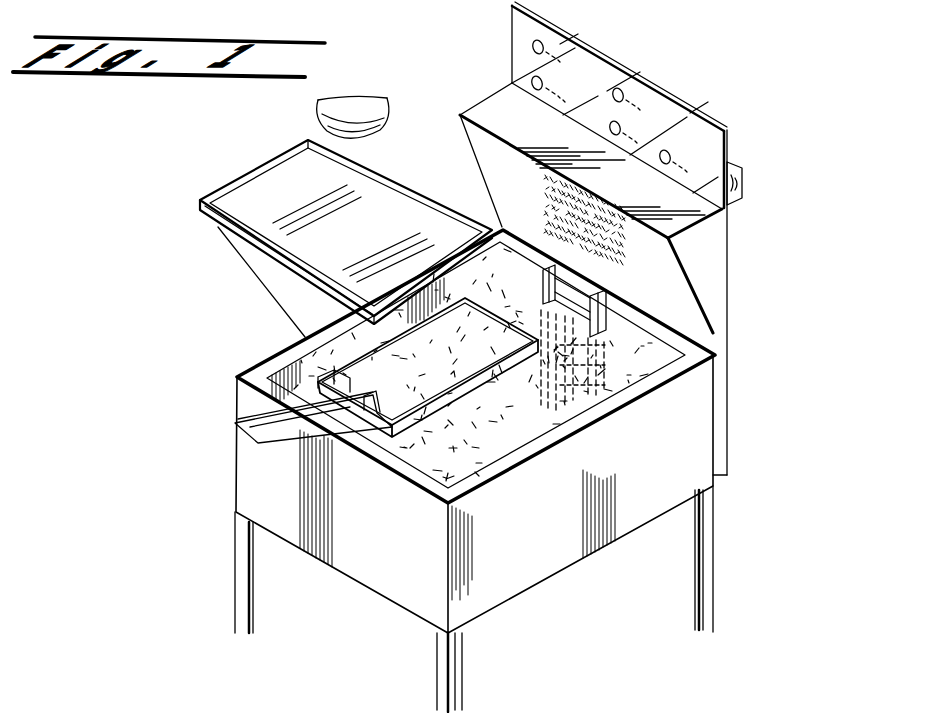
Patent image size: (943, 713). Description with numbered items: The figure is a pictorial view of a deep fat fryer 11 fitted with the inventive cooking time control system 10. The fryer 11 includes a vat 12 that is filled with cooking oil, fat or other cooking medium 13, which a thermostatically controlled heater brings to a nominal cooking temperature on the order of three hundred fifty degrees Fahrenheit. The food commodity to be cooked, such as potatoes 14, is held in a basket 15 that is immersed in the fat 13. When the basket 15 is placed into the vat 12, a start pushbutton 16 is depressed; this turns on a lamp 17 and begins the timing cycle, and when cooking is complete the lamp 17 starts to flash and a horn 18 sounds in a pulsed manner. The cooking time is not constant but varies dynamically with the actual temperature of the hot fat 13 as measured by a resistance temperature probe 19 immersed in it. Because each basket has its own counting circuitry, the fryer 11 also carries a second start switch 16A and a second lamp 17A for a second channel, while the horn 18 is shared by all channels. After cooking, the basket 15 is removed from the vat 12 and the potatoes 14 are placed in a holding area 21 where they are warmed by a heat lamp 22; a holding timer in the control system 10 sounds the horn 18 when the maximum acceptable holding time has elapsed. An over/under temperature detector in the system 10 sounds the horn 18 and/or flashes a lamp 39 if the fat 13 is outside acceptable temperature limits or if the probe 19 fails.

The cooking time control system 10 is at (742, 139).
The deep fat fryer 11 is at (228, 482).
The vat 12 is at (548, 562).
The cooking medium 13 is at (633, 377).
The potatoes 14 is at (400, 345).
The basket 15 is at (235, 423).
The start pushbutton 16 is at (531, 82).
The second start switch 16A is at (609, 124).
The lamp 17 is at (531, 46).
The second lamp 17A is at (621, 91).
The horn 18 is at (743, 198).
The resistance temperature probe 19 is at (572, 365).
The holding area 21 is at (302, 248).
The heat lamp 22 is at (367, 133).
The lamp 39 is at (666, 153).